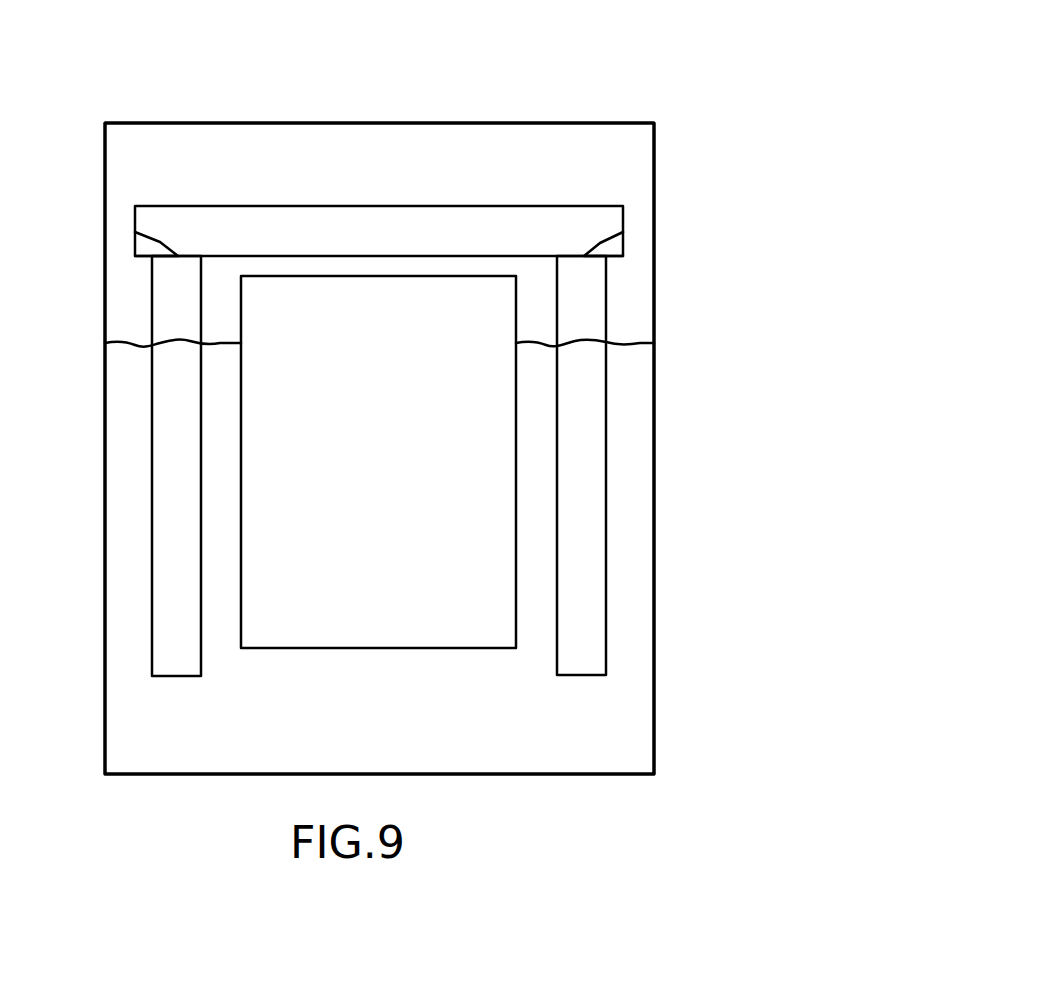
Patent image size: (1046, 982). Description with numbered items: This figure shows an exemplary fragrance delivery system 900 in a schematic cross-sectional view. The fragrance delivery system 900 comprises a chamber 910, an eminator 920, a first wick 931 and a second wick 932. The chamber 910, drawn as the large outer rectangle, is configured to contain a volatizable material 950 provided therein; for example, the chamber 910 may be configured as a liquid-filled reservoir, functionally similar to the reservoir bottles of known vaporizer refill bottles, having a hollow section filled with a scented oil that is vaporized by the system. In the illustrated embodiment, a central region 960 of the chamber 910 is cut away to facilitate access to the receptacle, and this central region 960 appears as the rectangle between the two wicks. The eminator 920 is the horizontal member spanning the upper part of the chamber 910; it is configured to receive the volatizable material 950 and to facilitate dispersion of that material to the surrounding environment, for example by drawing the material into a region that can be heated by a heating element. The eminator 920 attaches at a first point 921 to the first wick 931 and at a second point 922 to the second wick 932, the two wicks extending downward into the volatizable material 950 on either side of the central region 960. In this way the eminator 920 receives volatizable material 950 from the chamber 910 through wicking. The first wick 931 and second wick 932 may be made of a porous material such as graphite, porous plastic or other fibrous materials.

The fragrance delivery system 900 is at (590, 60).
The chamber 910 is at (654, 508).
The eminator 920 is at (435, 205).
The first point 921 is at (178, 255).
The second point 922 is at (584, 254).
The first wick 931 is at (152, 285).
The second wick 932 is at (606, 283).
The volatizable material 950 is at (640, 377).
The central region 960 is at (398, 461).